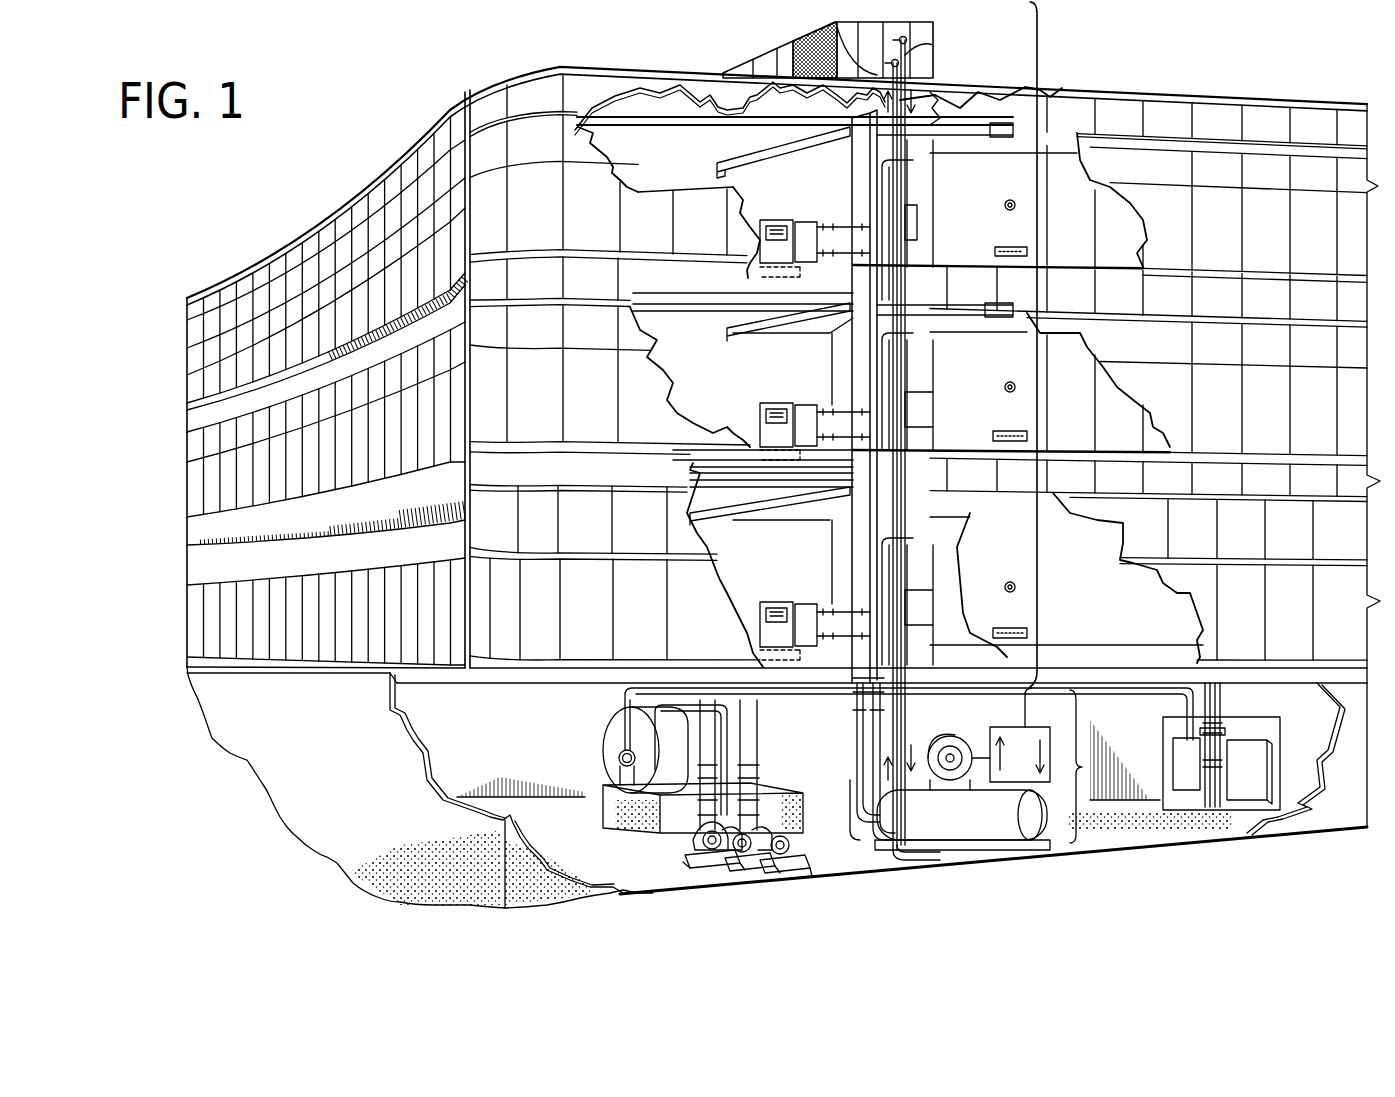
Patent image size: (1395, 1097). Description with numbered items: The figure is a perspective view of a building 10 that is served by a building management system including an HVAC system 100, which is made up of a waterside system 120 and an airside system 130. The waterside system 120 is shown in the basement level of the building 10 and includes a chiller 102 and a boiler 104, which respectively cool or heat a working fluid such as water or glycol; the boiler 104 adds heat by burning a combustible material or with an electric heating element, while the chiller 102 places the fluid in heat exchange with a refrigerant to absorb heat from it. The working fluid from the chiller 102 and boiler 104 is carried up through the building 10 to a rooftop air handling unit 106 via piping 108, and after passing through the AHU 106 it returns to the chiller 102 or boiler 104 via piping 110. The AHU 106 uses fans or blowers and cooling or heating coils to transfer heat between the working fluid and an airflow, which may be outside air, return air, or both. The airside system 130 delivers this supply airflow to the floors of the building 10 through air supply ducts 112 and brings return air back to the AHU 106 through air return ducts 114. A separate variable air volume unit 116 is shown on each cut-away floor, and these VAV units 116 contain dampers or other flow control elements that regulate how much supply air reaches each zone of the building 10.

The building 10 is at (342, 124).
The HVAC system 100 is at (1090, 860).
The chiller 102 is at (983, 813).
The boiler 104 is at (617, 738).
The rooftop air handling unit (AHU) 106 is at (927, 70).
The piping 108 is at (835, 28).
The piping 110 is at (905, 43).
The air supply ducts 112 is at (863, 145).
The air return ducts 114 is at (763, 263).
The variable air volume (VAV) units 116 is at (815, 230).
The waterside system 120 is at (1083, 770).
The airside system 130 is at (1040, 343).